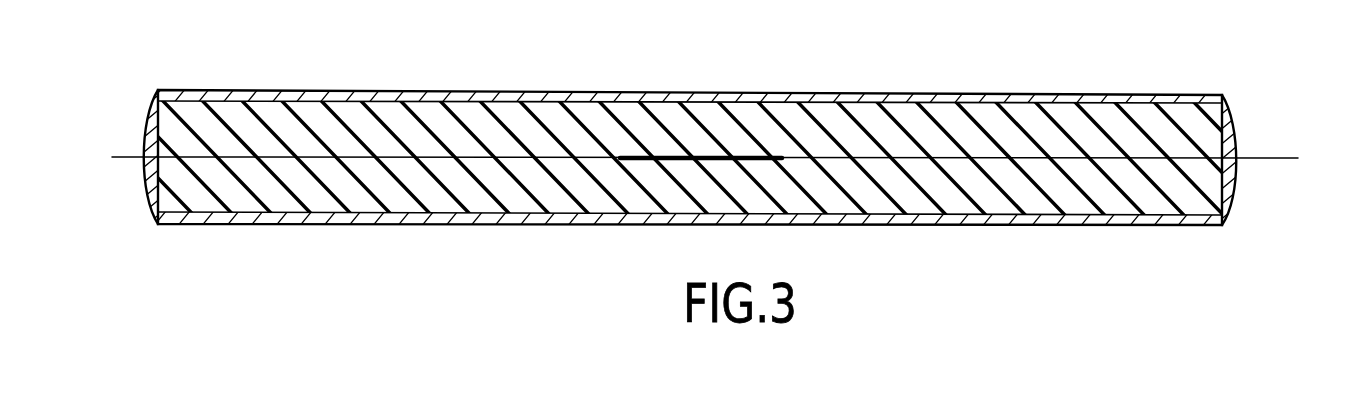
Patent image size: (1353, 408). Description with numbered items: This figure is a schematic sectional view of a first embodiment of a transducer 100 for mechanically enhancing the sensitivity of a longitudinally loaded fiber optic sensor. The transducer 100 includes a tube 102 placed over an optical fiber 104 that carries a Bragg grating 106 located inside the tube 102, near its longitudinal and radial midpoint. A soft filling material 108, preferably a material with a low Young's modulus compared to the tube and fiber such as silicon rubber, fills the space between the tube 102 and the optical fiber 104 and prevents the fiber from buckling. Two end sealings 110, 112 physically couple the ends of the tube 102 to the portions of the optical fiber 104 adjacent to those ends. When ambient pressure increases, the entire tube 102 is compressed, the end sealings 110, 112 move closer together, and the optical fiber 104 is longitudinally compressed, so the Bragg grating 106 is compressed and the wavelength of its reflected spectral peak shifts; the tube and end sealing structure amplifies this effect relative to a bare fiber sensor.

The transducer 100 is at (298, 283).
The tube 102 is at (715, 92).
The optical fiber 104 is at (1262, 160).
The Bragg grating 106 is at (706, 162).
The filling material 108 is at (1060, 120).
The end sealing 110 is at (150, 117).
The end sealing 112 is at (1232, 112).